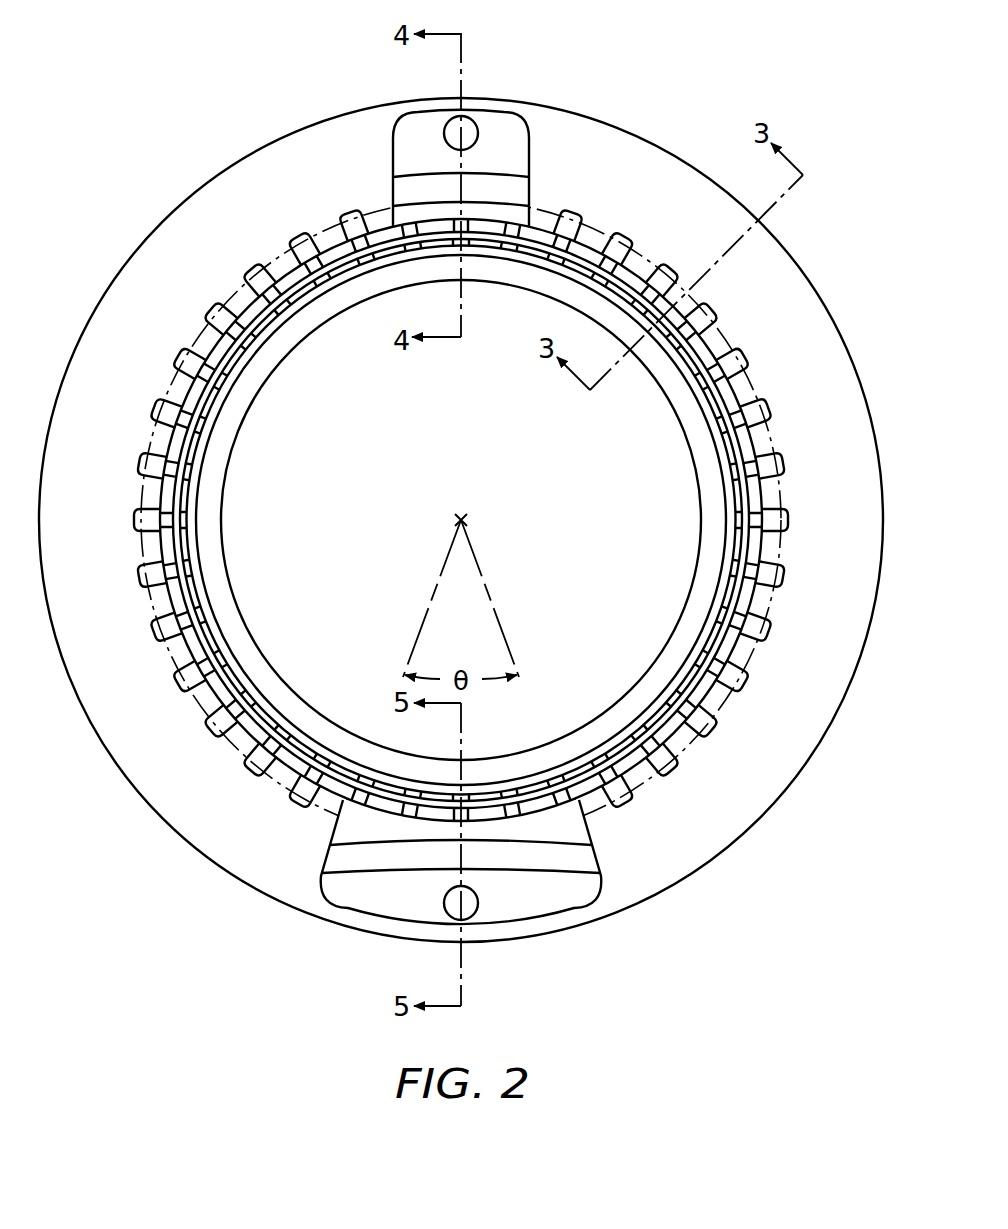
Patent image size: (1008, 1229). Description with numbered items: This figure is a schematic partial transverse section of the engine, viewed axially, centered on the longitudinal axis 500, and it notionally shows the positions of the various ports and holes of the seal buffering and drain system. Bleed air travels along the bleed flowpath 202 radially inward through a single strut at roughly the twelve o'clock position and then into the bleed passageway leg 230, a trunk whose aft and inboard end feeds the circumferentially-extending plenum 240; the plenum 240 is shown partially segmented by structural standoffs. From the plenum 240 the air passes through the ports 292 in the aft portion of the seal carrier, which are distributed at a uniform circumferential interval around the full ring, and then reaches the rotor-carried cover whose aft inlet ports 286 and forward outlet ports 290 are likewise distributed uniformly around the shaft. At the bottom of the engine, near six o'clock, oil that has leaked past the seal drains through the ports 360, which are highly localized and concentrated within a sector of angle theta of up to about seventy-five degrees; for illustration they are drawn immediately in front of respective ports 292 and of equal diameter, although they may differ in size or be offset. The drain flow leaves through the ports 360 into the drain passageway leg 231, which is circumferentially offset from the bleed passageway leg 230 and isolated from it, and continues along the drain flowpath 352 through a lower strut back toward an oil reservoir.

The bleed flowpath 202 is at (472, 119).
The bleed passageway leg 230 is at (472, 133).
The drain passageway leg 231 is at (444, 904).
The circumferentially-extending plenum 240 is at (763, 403).
The aft inlet ports 286 is at (186, 567).
The forward outlet ports 290 is at (186, 567).
The ports 292 is at (174, 470).
The drain flowpath 352 is at (471, 907).
The ports 360 is at (563, 793).
The longitudinal axis 500 is at (467, 521).